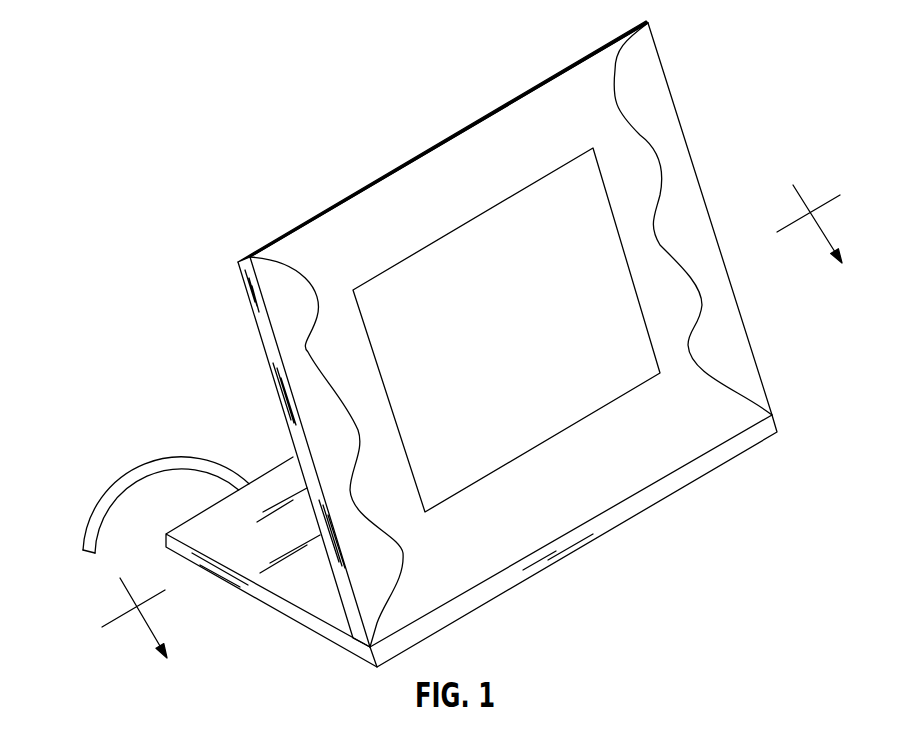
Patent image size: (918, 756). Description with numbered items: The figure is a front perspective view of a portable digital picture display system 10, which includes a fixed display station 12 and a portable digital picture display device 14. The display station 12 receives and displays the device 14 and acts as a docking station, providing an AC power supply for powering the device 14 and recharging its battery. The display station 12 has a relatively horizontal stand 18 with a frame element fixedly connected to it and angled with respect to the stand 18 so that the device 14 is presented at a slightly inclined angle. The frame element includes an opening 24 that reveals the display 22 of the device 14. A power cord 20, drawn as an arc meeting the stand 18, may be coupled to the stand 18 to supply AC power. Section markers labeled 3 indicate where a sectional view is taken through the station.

The portable digital picture display system 10 is at (401, 100).
The fixed display station 12 is at (515, 137).
The portable digital picture display device 14 is at (501, 236).
The stand 18 is at (262, 594).
The power cord 20 is at (137, 465).
The display 22 is at (605, 250).
The opening 24 is at (420, 272).
The section line 3- 3 is at (478, 440).